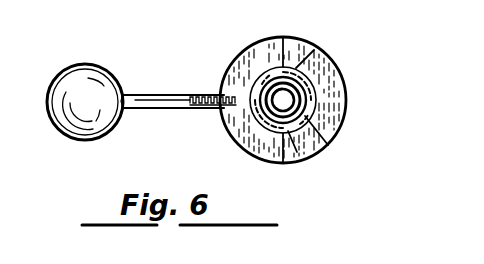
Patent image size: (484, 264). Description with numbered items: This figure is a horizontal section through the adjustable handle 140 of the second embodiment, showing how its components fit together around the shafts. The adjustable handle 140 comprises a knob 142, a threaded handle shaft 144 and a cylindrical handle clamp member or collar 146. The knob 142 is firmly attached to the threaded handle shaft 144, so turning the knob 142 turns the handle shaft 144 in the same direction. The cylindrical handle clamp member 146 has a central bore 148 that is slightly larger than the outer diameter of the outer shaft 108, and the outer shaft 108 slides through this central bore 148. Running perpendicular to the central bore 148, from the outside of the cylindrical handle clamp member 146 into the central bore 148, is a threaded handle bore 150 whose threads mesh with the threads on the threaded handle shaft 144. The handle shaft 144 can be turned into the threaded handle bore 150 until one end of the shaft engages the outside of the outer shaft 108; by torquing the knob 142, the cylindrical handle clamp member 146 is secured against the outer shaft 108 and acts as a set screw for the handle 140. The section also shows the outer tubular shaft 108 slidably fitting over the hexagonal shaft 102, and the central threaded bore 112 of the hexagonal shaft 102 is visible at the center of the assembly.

The adjustable handle 140 is at (105, 148).
The knob 142 is at (73, 90).
The handle shaft 144 is at (158, 100).
The threaded handle bore 150 is at (238, 90).
The cylindrical handle clamp member 146 is at (345, 88).
The central bore 148 is at (328, 145).
The outer shaft 108 is at (297, 152).
The hexagonal shaft 102 is at (283, 38).
The central threaded bore 112 is at (314, 50).